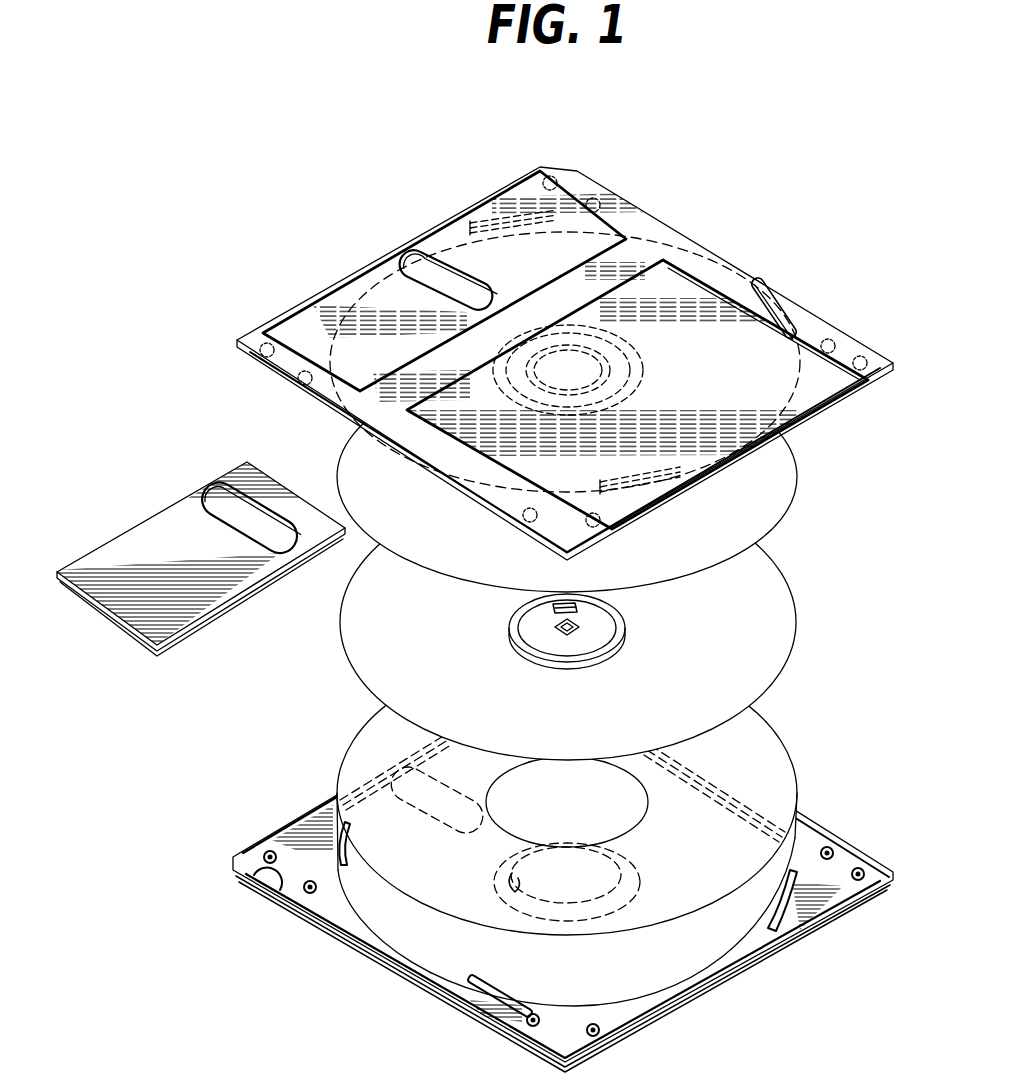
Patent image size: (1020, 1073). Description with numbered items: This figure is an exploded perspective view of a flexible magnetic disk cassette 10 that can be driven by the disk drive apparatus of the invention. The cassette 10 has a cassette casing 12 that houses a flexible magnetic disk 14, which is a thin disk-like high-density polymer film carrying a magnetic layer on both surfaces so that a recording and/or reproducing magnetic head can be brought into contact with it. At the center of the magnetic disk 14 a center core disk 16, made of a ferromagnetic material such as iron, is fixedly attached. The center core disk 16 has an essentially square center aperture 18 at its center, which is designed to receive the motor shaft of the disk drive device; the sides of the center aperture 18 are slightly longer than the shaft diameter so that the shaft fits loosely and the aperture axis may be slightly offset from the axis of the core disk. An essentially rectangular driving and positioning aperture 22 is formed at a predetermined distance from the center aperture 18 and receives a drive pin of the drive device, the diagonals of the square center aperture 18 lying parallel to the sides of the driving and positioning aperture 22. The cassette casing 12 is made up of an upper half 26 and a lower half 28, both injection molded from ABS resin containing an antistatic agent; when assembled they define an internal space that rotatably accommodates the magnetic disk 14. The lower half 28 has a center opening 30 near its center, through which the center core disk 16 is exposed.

The flexible magnetic disk cassette 10 is at (800, 534).
The cassette casing 12 is at (813, 842).
The flexible magnetic disk 14 is at (788, 623).
The center core disk 16 is at (540, 637).
The center aperture 18 is at (632, 616).
The driving and positioning aperture 22 is at (553, 607).
The upper half 26 is at (740, 272).
The lower half 28 is at (615, 1012).
The center opening 30 is at (515, 885).